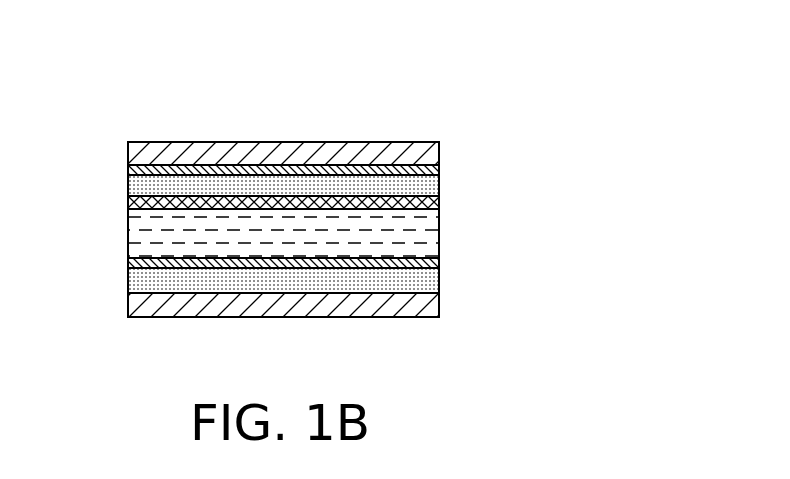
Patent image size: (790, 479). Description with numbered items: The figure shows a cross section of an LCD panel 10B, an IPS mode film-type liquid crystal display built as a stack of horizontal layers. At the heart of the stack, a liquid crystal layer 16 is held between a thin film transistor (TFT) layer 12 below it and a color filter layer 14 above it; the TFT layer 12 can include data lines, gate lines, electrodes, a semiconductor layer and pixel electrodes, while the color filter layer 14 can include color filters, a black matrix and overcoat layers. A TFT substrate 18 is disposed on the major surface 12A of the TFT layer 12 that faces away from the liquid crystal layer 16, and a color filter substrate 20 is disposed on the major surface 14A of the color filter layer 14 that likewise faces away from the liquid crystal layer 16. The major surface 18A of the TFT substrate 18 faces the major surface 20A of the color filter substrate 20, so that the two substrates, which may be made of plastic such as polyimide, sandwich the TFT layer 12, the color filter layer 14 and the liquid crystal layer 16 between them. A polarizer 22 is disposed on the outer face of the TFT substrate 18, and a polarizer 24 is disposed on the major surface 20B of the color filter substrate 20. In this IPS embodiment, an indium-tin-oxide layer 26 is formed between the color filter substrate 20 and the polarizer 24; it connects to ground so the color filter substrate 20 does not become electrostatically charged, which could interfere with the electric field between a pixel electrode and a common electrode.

The LCD panel 10B is at (588, 78).
The polarizer 24 is at (425, 143).
The indium-tin-oxide (ITO) layer 26 is at (436, 165).
The color filter substrate 20 is at (439, 186).
The color filter layer 14 is at (439, 206).
The liquid crystal layer 16 is at (439, 231).
The thin film transistor (TFT) layer 12 is at (439, 262).
The thin film transistor (TFT) substrate 18 is at (439, 286).
The polarizer 22 is at (431, 308).
The major surface of the color filter substrate 20B is at (139, 173).
The major surface of the TFT layer 12A is at (139, 269).
The major surface of the TFT substrate 18A is at (186, 268).
The major surface of the color filter layer 14A is at (257, 195).
The major surface of the color filter substrate 20A is at (312, 198).